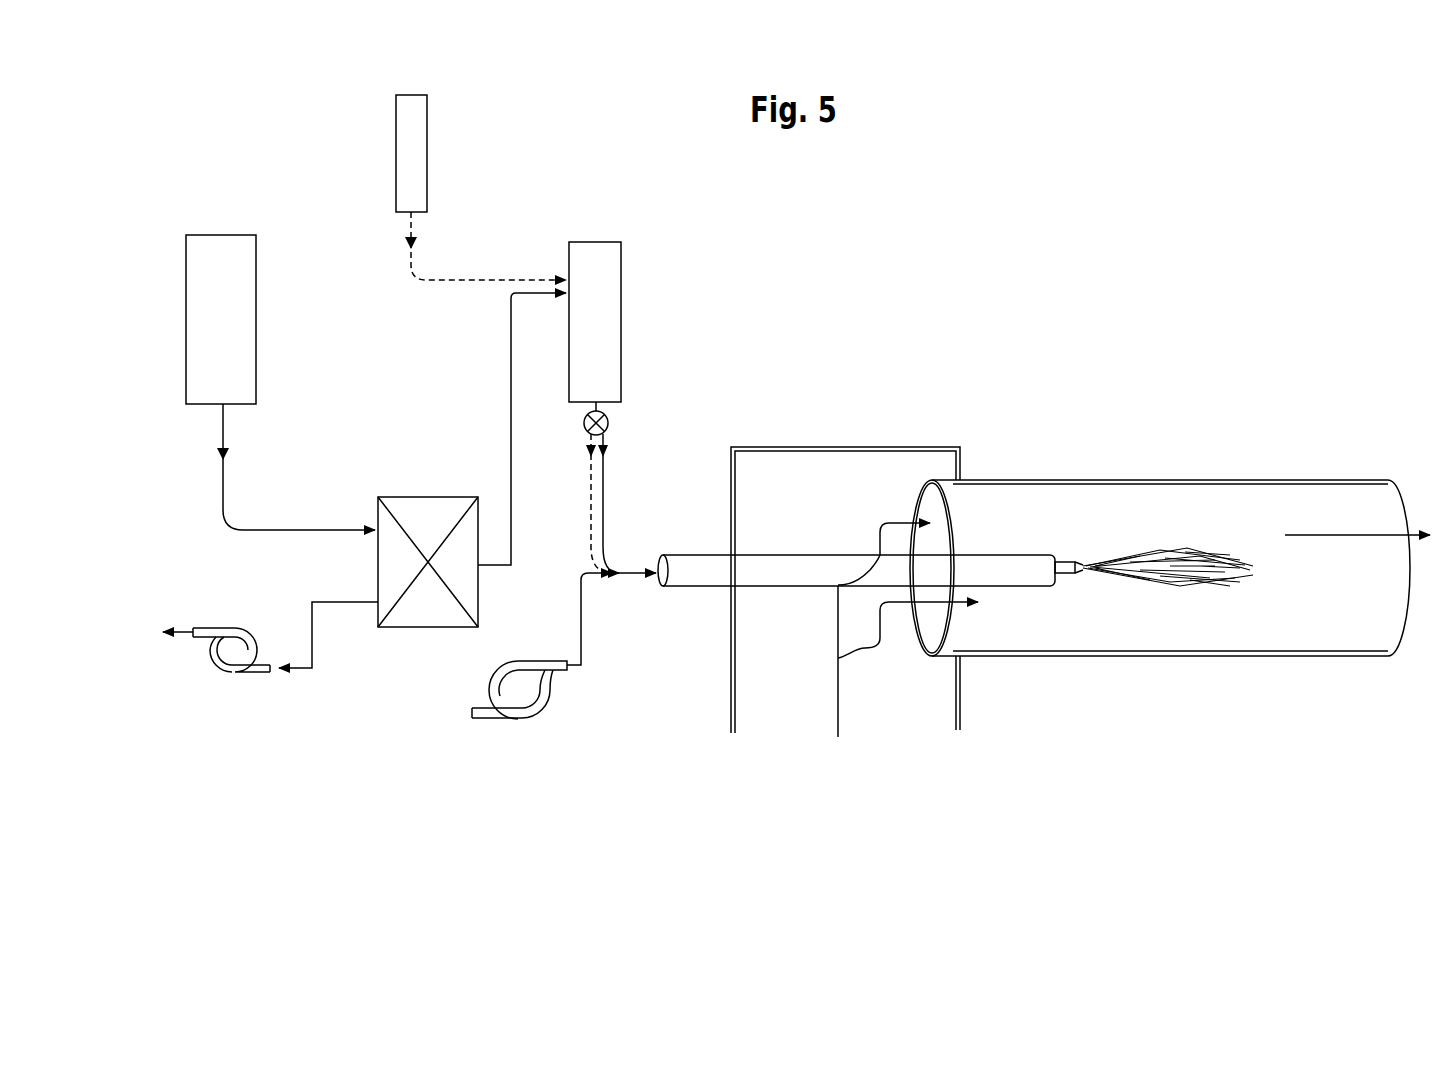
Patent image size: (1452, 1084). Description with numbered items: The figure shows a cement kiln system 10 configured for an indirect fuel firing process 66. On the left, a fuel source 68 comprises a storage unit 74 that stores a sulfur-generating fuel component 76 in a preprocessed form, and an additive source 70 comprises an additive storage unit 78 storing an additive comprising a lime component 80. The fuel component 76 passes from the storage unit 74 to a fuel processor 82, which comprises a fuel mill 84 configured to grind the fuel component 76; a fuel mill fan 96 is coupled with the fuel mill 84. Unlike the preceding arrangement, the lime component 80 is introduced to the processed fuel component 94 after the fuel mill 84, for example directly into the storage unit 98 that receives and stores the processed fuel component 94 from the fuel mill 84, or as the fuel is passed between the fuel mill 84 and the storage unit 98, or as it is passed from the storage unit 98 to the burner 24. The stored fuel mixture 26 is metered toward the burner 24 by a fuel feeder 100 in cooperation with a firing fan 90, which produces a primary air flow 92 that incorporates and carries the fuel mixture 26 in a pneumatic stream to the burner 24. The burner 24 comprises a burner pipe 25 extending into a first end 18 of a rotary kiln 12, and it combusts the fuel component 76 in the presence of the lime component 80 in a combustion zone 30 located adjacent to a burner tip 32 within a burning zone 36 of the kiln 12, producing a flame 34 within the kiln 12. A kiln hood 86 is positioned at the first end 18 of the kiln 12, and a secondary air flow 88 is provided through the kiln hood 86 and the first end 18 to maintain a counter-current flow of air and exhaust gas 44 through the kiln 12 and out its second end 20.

The cement kiln system 10 is at (568, 129).
The rotary kiln 12 is at (1292, 480).
The first end 18 is at (958, 645).
The second end 20 is at (1381, 664).
The burner 24 is at (683, 592).
The burner pipe 25 is at (769, 562).
The fuel mixture 26 is at (603, 525).
The combustion zone 30 is at (1092, 562).
The burner tip 32 is at (1070, 562).
The flame 34 is at (1185, 552).
The burning zone 36 is at (1098, 605).
The exhaust gas 44 is at (1410, 532).
The indirect fuel firing process 66 is at (381, 732).
The fuel source 68 is at (183, 307).
The additive source 70 is at (392, 132).
The storage unit 74 is at (221, 319).
The fuel component 76 is at (224, 430).
The additive storage unit 78 is at (411, 153).
The lime component 80 is at (415, 260).
The fuel processor 82 is at (432, 632).
The fuel mill 84 is at (428, 562).
The kiln hood 86 is at (867, 447).
The secondary air flow 88 is at (838, 627).
The firing fan 90 is at (497, 722).
The primary air flow 92 is at (581, 630).
The processed fuel component 94 is at (511, 425).
The fuel mill fan 96 is at (232, 627).
The storage unit 98 is at (635, 376).
The fuel feeder 100 is at (608, 423).